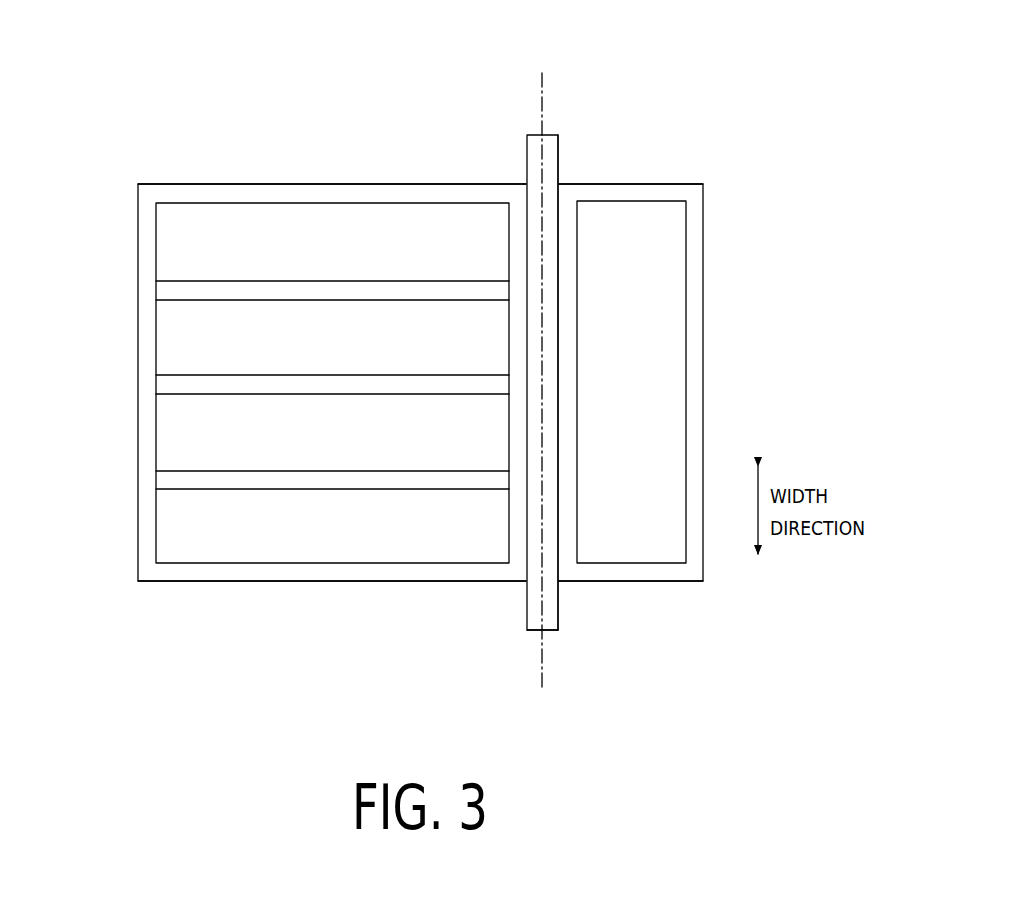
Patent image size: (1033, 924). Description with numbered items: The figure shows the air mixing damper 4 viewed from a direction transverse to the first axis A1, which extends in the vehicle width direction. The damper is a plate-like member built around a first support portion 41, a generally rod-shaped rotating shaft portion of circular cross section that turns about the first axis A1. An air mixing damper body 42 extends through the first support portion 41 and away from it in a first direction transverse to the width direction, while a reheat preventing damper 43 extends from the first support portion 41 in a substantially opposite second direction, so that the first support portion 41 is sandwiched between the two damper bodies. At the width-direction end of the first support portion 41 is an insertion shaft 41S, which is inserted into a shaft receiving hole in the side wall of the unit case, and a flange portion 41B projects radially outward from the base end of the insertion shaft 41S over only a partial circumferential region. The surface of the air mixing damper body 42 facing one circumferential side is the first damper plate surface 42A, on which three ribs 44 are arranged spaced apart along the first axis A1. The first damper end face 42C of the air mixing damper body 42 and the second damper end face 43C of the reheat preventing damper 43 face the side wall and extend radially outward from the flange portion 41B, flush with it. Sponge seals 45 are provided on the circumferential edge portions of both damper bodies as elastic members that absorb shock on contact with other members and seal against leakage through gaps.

The air mixing damper 4 is at (745, 203).
The first support portion 41 is at (553, 135).
The insertion shaft 41S is at (538, 612).
The flange portion 41B is at (520, 582).
The air mixing damper body 42 is at (138, 523).
The first damper plate surface 42A is at (338, 540).
The first damper end face 42C is at (248, 583).
The reheat preventing damper 43 is at (705, 373).
The second damper end face 43C is at (640, 582).
The ribs 44 is at (190, 281).
The sponge seals 45 is at (277, 190).
The first axis A1 is at (548, 660).